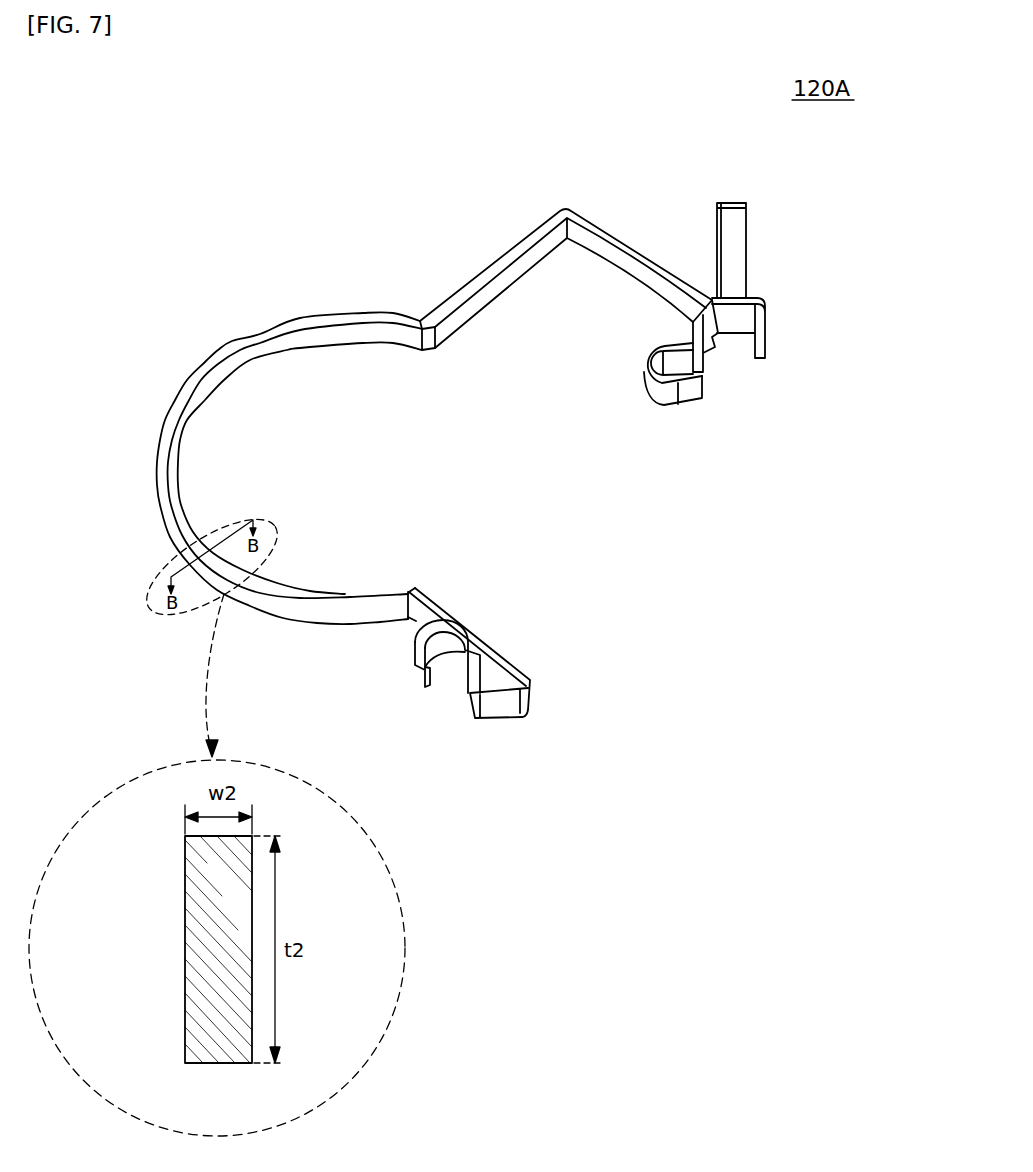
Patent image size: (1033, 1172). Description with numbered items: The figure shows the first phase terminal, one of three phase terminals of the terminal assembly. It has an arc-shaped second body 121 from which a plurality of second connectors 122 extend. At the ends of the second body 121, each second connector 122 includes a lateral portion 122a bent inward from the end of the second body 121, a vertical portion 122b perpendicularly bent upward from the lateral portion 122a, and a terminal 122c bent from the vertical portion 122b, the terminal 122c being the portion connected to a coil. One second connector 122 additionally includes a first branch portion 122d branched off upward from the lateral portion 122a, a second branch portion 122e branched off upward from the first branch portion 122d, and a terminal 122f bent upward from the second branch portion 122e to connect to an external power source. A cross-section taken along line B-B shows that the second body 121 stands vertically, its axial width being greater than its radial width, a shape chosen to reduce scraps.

The second body 121 is at (238, 341).
The second connector 122 is at (594, 426).
The lateral portion 122a is at (465, 310).
The vertical portion 122b is at (677, 357).
The terminal 122c is at (690, 392).
The first branch portion 122d is at (691, 338).
The second branch portion 122e is at (767, 341).
The terminal 122f is at (734, 254).